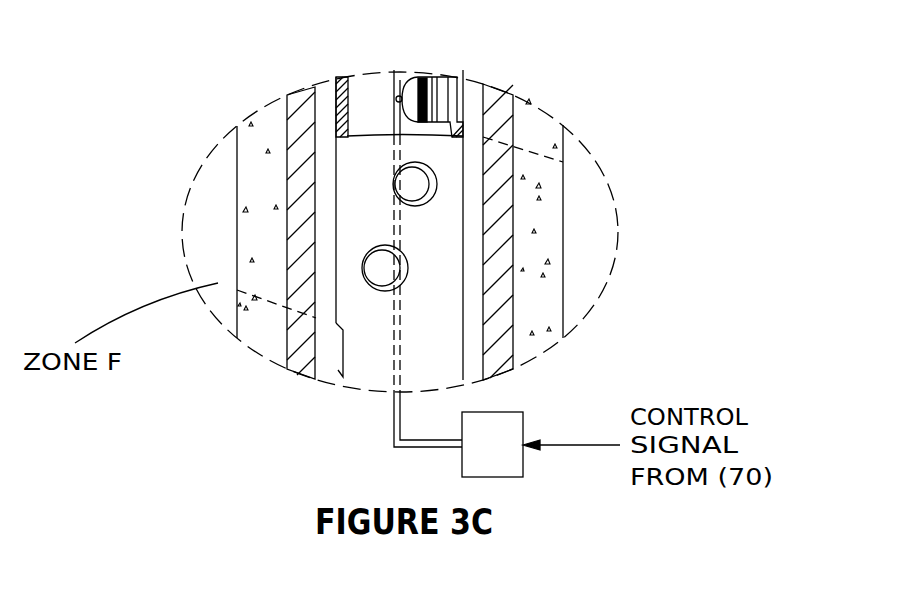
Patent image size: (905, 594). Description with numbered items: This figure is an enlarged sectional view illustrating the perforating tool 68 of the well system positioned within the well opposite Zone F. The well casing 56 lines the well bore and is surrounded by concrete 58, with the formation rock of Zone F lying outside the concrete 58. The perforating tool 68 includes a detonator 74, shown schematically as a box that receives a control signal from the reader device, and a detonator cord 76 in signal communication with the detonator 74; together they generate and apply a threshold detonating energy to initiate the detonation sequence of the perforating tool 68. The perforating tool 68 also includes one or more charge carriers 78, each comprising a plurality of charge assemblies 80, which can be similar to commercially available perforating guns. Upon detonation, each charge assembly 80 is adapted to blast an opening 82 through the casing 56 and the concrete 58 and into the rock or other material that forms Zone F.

The well casing 56 is at (293, 330).
The concrete 58 is at (542, 257).
The perforating tool 68 is at (353, 178).
The detonator 74 is at (497, 420).
The detonator cord 76 is at (345, 90).
The charge carrier 78 is at (370, 373).
The charge assembly 80 is at (440, 90).
The opening 82 is at (520, 95).